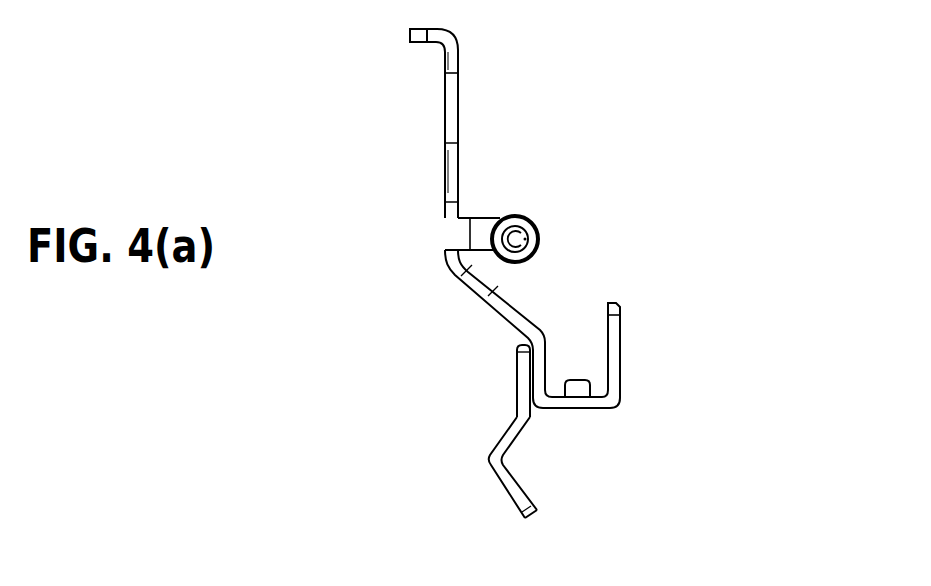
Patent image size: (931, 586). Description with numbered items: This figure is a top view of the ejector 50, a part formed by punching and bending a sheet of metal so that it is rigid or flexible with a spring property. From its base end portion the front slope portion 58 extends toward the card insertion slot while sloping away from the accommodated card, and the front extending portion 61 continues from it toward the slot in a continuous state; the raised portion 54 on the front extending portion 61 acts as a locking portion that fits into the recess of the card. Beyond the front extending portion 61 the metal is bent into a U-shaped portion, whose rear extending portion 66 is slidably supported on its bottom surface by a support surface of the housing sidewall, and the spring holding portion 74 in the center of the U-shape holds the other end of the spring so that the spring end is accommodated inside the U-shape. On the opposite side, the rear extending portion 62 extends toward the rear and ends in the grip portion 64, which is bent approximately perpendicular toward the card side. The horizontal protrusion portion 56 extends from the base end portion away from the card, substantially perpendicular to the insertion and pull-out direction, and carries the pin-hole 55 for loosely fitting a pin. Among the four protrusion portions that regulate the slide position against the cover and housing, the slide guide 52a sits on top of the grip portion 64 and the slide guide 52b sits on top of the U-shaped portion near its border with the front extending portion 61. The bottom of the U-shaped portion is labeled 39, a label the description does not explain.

The ejector 50 is at (583, 50).
The slide guide 52a is at (410, 38).
The slide guide 52b is at (540, 372).
The raised portion 54 is at (487, 459).
The pin-hole 55 is at (527, 238).
The horizontal protrusion portion 56 is at (484, 223).
The front slope portion 58 is at (518, 318).
The front extending portion 61 is at (523, 513).
The rear extending portion 62 is at (455, 107).
The grip portion 64 is at (430, 28).
The rear extending portion 66 is at (615, 351).
The spring holding portion 74 is at (578, 382).
The bottom portion 39 is at (580, 411).